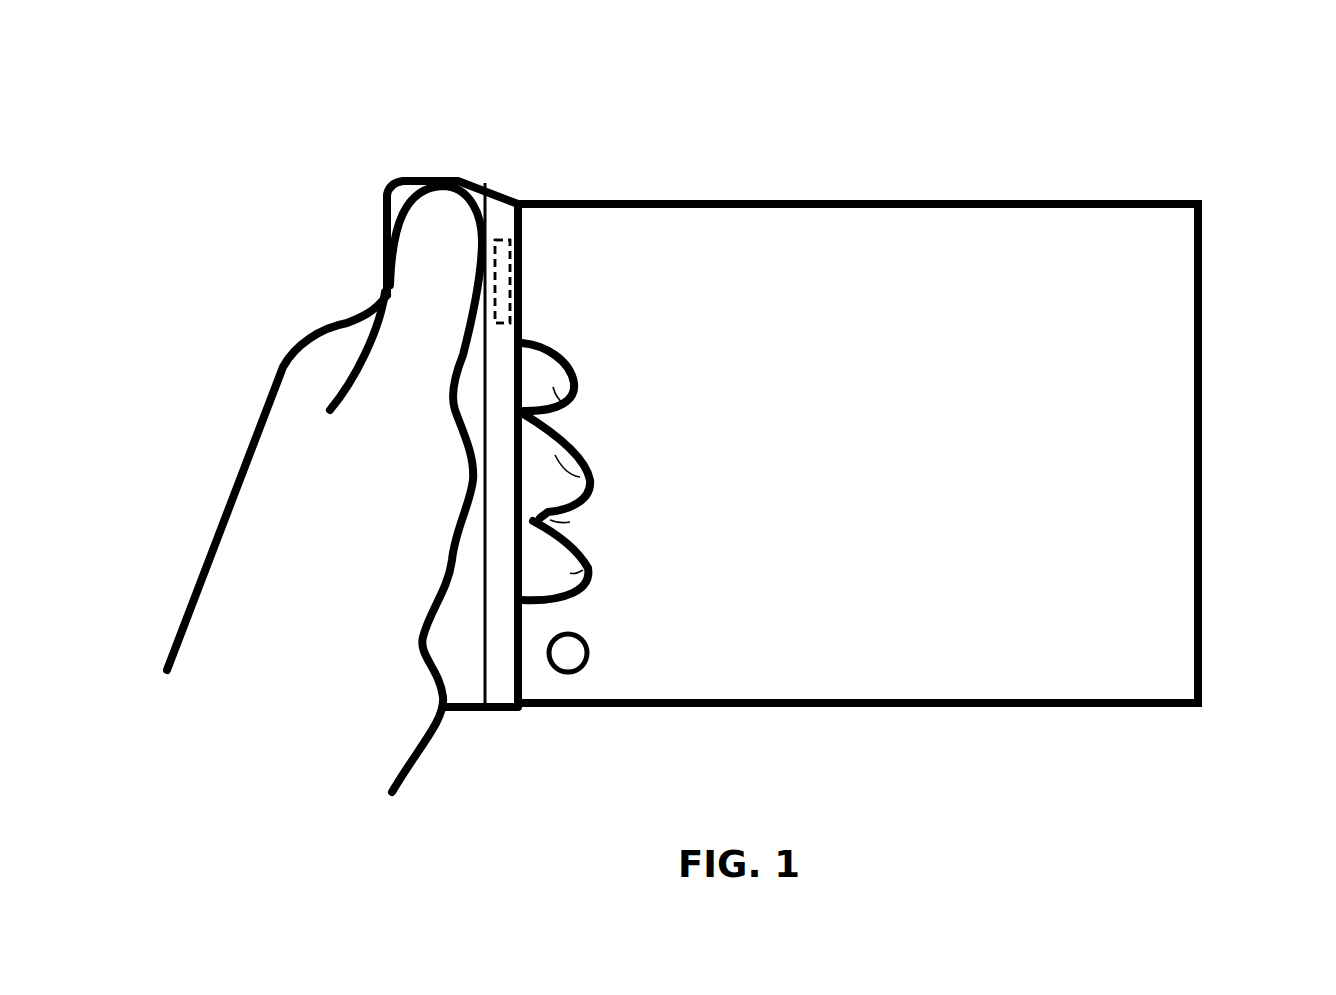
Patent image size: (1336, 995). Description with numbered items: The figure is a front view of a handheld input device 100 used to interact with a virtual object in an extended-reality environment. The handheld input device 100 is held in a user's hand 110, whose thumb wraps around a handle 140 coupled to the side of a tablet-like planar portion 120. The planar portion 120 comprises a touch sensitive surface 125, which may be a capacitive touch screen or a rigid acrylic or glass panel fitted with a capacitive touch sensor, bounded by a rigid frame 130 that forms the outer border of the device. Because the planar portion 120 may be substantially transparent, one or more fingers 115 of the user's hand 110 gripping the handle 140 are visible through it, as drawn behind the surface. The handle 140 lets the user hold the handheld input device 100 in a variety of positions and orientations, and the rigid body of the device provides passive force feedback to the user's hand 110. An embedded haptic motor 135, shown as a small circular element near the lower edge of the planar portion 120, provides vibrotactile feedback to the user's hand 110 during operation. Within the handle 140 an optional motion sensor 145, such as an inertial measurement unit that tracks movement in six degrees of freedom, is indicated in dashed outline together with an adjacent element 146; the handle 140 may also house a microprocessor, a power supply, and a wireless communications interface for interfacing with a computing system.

The handheld input device 100 is at (685, 75).
The user's hand 110 is at (308, 488).
The fingers 115 is at (587, 568).
The planar portion 120 is at (1195, 185).
The touch sensitive surface 125 is at (1147, 467).
The rigid frame 130 is at (1200, 267).
The haptic motor 135 is at (572, 660).
The handle 140 is at (513, 167).
The motion sensor 145 is at (523, 317).
The button 146 is at (502, 281).